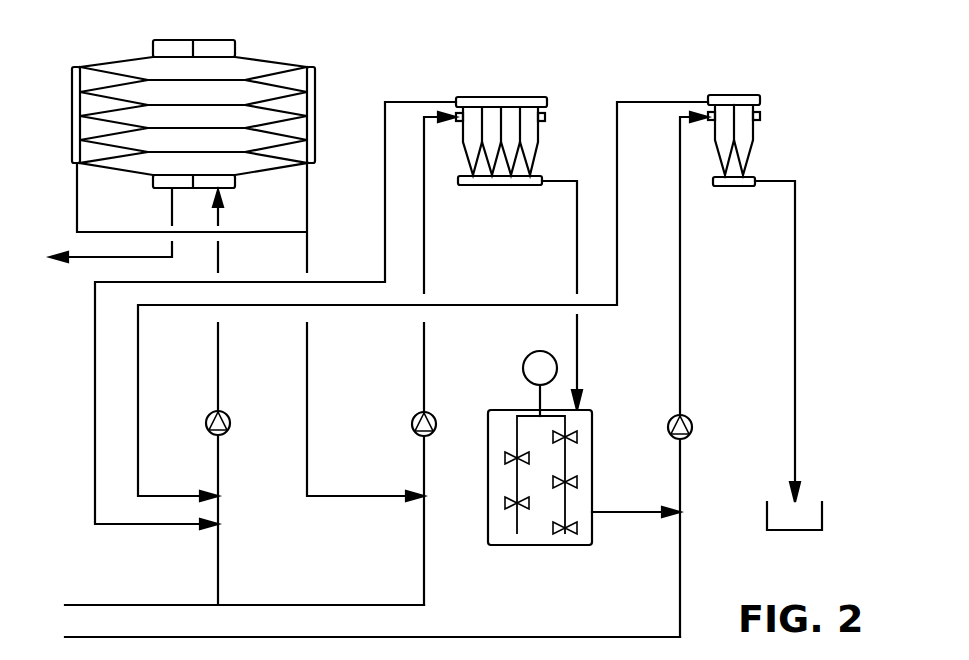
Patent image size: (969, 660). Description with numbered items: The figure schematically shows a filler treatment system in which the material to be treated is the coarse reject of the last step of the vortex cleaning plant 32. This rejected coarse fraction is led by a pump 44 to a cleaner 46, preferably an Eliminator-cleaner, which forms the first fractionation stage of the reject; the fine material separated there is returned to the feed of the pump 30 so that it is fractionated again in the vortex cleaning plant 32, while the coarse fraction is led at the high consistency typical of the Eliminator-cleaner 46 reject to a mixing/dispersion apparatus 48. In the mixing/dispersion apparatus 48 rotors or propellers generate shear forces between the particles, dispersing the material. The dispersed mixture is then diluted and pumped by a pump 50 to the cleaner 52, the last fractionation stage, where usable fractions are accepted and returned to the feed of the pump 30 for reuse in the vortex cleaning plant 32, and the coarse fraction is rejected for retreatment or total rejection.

The vortex cleaning plant 32 is at (104, 57).
The cleaner 46 is at (508, 90).
The cleaner 52 is at (725, 118).
The pump 30 is at (230, 430).
The pump 44 is at (412, 430).
The mixing/dispersion apparatus 48 is at (500, 430).
The pump 50 is at (689, 433).